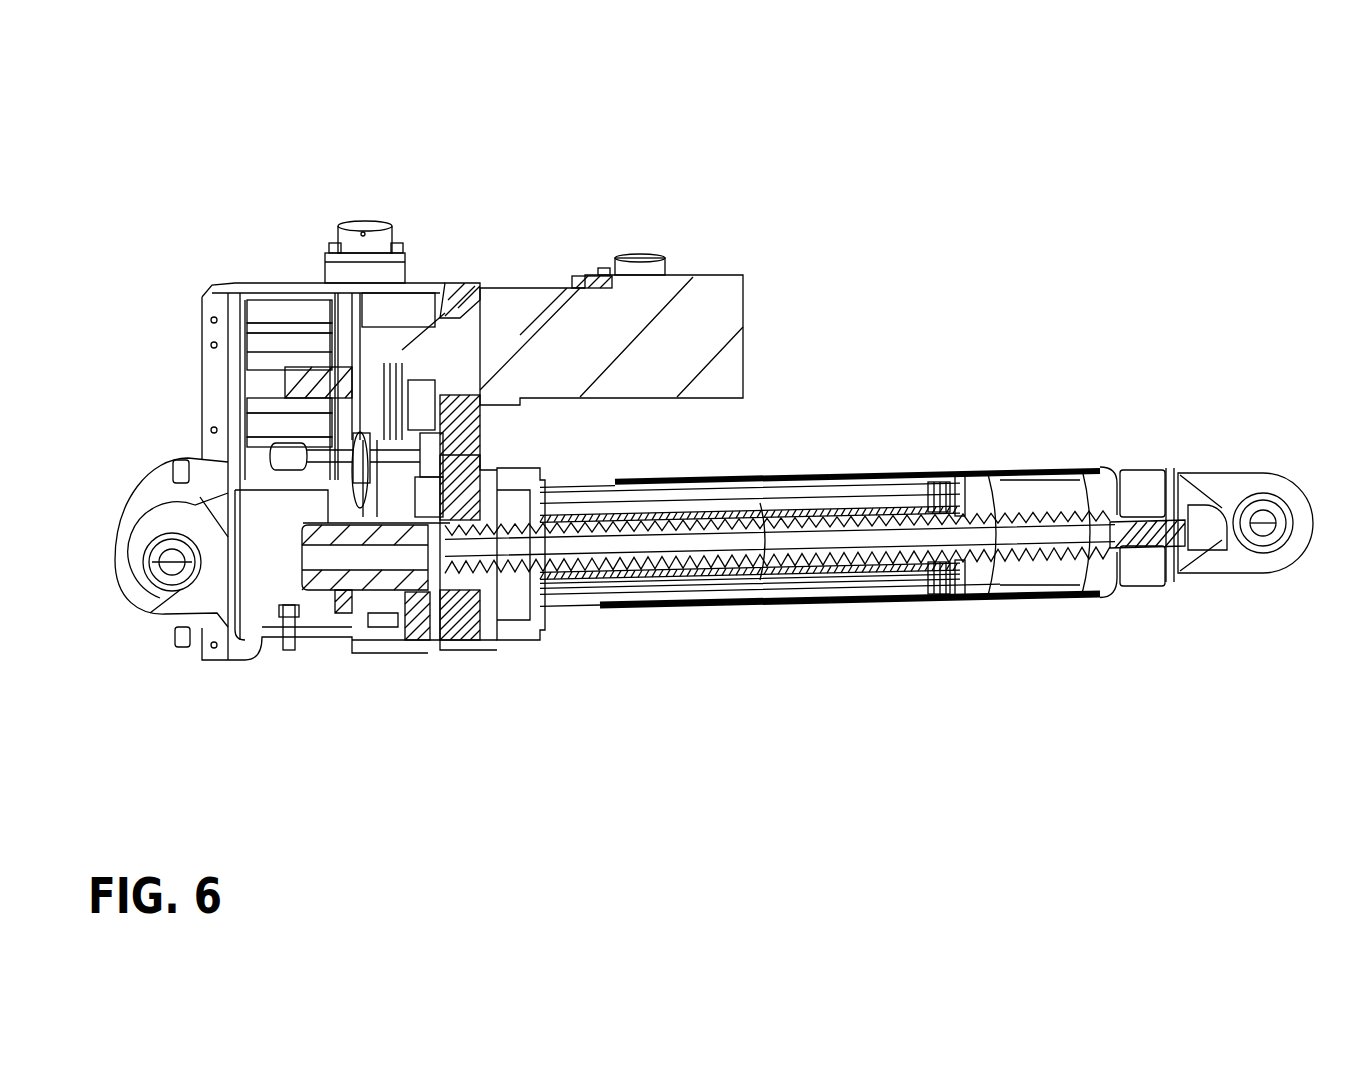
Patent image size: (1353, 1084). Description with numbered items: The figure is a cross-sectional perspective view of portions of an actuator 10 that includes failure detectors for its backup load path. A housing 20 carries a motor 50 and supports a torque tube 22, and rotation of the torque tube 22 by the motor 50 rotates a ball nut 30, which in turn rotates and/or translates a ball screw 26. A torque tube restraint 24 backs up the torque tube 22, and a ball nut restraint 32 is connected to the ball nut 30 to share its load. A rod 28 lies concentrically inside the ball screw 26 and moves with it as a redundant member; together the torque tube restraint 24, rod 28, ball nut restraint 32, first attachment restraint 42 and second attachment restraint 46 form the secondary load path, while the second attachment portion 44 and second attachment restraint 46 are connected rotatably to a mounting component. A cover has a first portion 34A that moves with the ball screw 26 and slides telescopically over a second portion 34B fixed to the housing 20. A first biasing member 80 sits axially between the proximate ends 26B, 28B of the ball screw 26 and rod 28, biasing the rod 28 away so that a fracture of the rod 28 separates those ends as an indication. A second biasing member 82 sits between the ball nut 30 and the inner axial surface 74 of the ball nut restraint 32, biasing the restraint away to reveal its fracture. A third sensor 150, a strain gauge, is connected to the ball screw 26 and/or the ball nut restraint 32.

The actuator 10 is at (181, 158).
The housing 20 is at (310, 270).
The torque tube 22 is at (628, 512).
The torque tube restraint 24 is at (700, 498).
The ball screw 26 is at (1102, 500).
The proximate end of the ball screw 26B is at (545, 462).
The rod 28 is at (880, 540).
The proximate end of the rod 28B is at (418, 622).
The ball nut 30 is at (828, 478).
The ball nut restraint 32 is at (960, 470).
The first portion of the cover 34A is at (1075, 611).
The second portion of the cover 34B is at (600, 608).
The first attachment restraint 42 is at (1223, 475).
The second attachment portion 44 is at (1238, 500).
The second attachment restraint 46 is at (132, 532).
The motor 50 is at (581, 273).
The inner axial surface of the ball nut restraint 74 is at (940, 480).
The first biasing member 80 is at (465, 612).
The second biasing member 82 is at (945, 588).
The third sensor 150 is at (1233, 548).